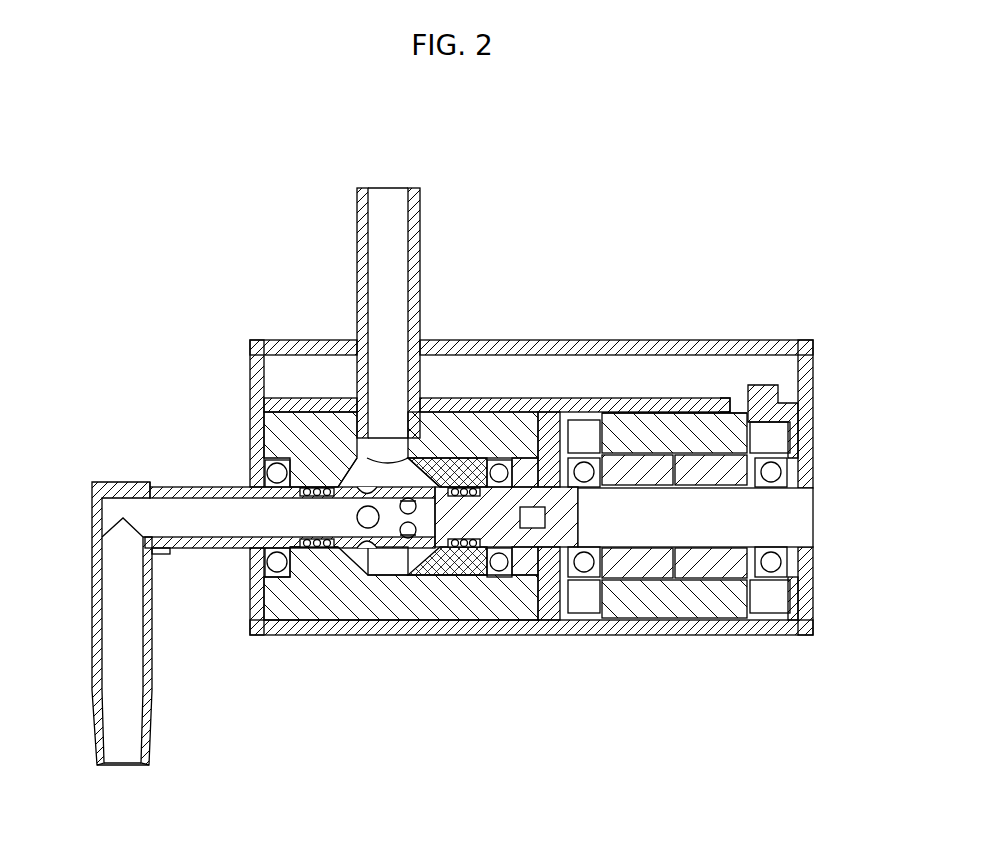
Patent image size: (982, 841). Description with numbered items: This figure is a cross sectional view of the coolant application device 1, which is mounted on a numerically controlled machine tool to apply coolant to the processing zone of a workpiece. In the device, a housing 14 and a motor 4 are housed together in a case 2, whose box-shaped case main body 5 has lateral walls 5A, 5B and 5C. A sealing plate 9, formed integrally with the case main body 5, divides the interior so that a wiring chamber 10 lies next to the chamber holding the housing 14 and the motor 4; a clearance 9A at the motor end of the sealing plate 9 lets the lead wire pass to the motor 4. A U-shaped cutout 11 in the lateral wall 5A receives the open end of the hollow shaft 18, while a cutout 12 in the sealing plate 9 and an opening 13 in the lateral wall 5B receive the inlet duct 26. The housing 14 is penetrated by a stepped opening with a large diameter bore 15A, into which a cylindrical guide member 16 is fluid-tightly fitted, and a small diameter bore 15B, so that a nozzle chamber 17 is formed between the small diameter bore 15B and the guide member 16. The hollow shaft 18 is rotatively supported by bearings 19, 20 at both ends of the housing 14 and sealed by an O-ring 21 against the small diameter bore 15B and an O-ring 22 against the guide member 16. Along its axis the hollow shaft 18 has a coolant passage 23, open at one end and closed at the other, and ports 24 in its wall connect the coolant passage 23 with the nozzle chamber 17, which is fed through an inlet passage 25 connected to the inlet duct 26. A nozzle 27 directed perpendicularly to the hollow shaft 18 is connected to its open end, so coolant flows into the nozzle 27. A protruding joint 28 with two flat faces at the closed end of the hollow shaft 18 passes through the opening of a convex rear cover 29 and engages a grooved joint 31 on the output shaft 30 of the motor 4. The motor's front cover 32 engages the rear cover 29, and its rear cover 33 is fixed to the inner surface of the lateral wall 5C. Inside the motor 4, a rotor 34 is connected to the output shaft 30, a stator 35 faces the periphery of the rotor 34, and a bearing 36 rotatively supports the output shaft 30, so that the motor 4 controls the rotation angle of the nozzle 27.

The coolant application device 1 is at (735, 245).
The case 2 is at (535, 464).
The motor 4 is at (683, 398).
The case main body 5 is at (740, 635).
The lateral wall 5A is at (250, 365).
The lateral wall 5B is at (275, 340).
The lateral wall 5C is at (815, 365).
The sealing plate 9 is at (657, 397).
The clearance 9A is at (737, 405).
The wiring chamber 10 is at (513, 340).
The cutout 11 is at (262, 468).
The cutout 12 is at (477, 400).
The opening 13 is at (418, 348).
The housing 14 is at (482, 396).
The large diameter bore 15A is at (440, 577).
The small diameter bore 15B is at (265, 532).
The guide member 16 is at (473, 562).
The nozzle chamber 17 is at (360, 549).
The hollow shaft 18 is at (190, 487).
The bearing 19 is at (247, 422).
The bearing 20 is at (510, 577).
The O-ring 21 is at (317, 550).
The O-ring 22 is at (467, 492).
The coolant passage 23 is at (188, 520).
The ports 24 is at (374, 548).
The inlet passage 25 is at (372, 452).
The inlet duct 26 is at (357, 208).
The nozzle 27 is at (92, 650).
The protruding joint 28 is at (533, 530).
The rear cover 29 is at (548, 420).
The output shaft 30 is at (790, 518).
The grooved joint 31 is at (582, 572).
The front cover 32 is at (588, 605).
The rear cover 33 is at (778, 393).
The rotor 34 is at (705, 578).
The stator 35 is at (770, 580).
The bearing 36 is at (780, 573).